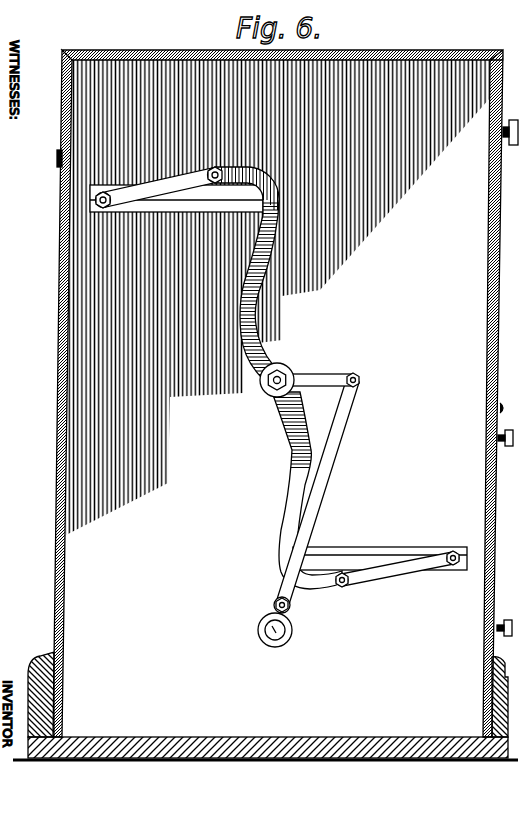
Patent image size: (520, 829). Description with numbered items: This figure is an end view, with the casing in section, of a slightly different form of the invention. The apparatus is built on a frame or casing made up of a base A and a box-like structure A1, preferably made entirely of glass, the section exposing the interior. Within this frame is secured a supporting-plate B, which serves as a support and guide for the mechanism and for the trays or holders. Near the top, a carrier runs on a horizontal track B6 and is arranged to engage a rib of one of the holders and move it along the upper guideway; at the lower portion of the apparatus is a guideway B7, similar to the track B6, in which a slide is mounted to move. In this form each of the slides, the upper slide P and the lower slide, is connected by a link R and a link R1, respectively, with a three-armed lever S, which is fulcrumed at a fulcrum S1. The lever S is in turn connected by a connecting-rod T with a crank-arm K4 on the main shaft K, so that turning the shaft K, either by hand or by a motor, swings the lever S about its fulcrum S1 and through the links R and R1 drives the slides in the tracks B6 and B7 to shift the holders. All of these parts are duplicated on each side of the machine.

The base A is at (290, 753).
The box-like structure A1 is at (261, 377).
The slide P is at (94, 198).
The link R is at (153, 184).
The horizontal track B6 is at (207, 200).
The supporting-plate B is at (283, 240).
The fulcrum S1 is at (296, 372).
The three-armed lever S is at (290, 441).
The connecting-rod T is at (327, 478).
The guideway B7 is at (427, 533).
The link R1 is at (400, 573).
The crank-arm K4 is at (291, 622).
The main shaft K is at (286, 640).